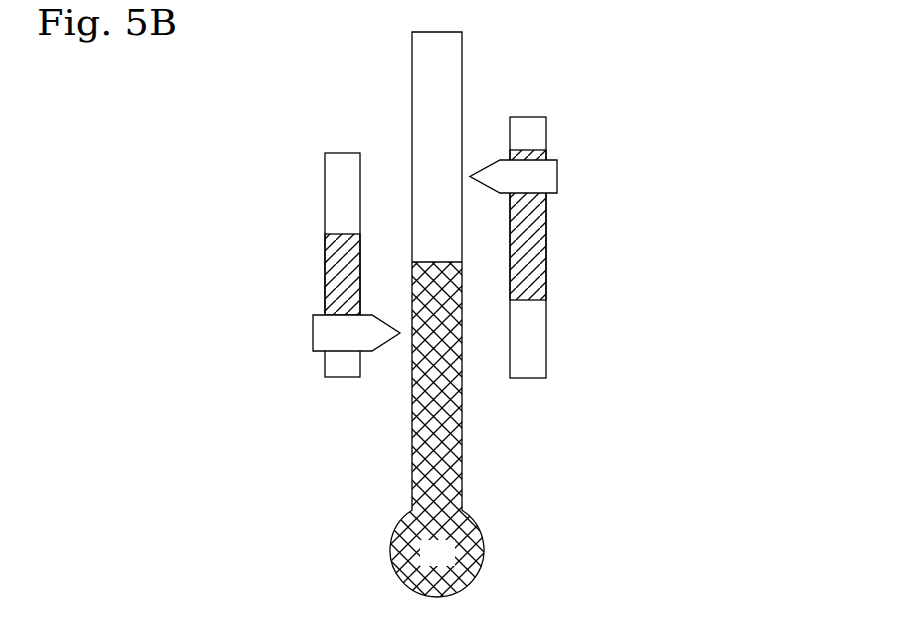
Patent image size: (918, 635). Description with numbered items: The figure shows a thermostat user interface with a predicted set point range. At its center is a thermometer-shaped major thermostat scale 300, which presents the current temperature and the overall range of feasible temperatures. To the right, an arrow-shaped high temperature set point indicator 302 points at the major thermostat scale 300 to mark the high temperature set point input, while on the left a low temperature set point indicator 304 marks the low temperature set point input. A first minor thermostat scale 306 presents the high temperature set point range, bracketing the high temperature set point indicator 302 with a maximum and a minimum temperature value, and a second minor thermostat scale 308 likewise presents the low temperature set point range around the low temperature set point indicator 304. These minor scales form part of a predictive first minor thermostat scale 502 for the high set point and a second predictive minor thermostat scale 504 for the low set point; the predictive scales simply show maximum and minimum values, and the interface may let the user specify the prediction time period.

The major thermostat scale 300 is at (462, 49).
The high temperature set point indicator 302 is at (557, 175).
The low temperature set point indicator 304 is at (313, 337).
The first minor thermostat scale 306 is at (546, 265).
The second minor thermostat scale 308 is at (325, 255).
The predictive first minor thermostat scale 502 is at (666, 201).
The second predictive minor thermostat scale 504 is at (218, 254).